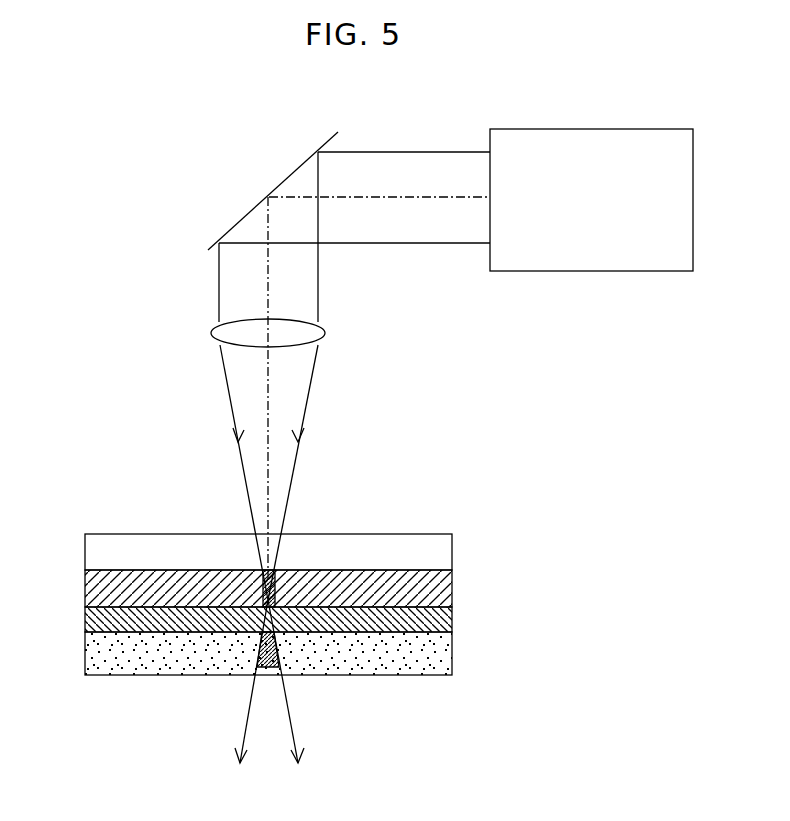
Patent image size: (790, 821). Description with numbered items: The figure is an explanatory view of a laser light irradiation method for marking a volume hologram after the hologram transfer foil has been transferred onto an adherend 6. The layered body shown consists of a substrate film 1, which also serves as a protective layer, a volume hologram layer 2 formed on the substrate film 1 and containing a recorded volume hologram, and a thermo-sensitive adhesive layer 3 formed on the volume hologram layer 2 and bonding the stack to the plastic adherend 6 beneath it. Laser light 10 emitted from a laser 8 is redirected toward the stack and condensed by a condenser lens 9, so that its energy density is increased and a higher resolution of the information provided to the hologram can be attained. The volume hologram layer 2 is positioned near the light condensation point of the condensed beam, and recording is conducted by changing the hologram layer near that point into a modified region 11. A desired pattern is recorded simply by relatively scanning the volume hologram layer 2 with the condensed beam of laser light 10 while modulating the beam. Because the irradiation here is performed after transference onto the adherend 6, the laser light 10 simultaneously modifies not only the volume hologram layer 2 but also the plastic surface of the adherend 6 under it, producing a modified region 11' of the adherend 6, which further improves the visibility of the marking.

The substrate film 1 is at (100, 557).
The volume hologram layer 2 is at (105, 593).
The thermo-sensitive adhesive layer 3 is at (90, 622).
The adherend 6 is at (435, 652).
The laser 8 is at (587, 272).
The condenser lens 9 is at (325, 333).
The laser light 10 is at (306, 408).
The modified region 11 is at (308, 557).
The modified region of the adherend 11' is at (225, 673).